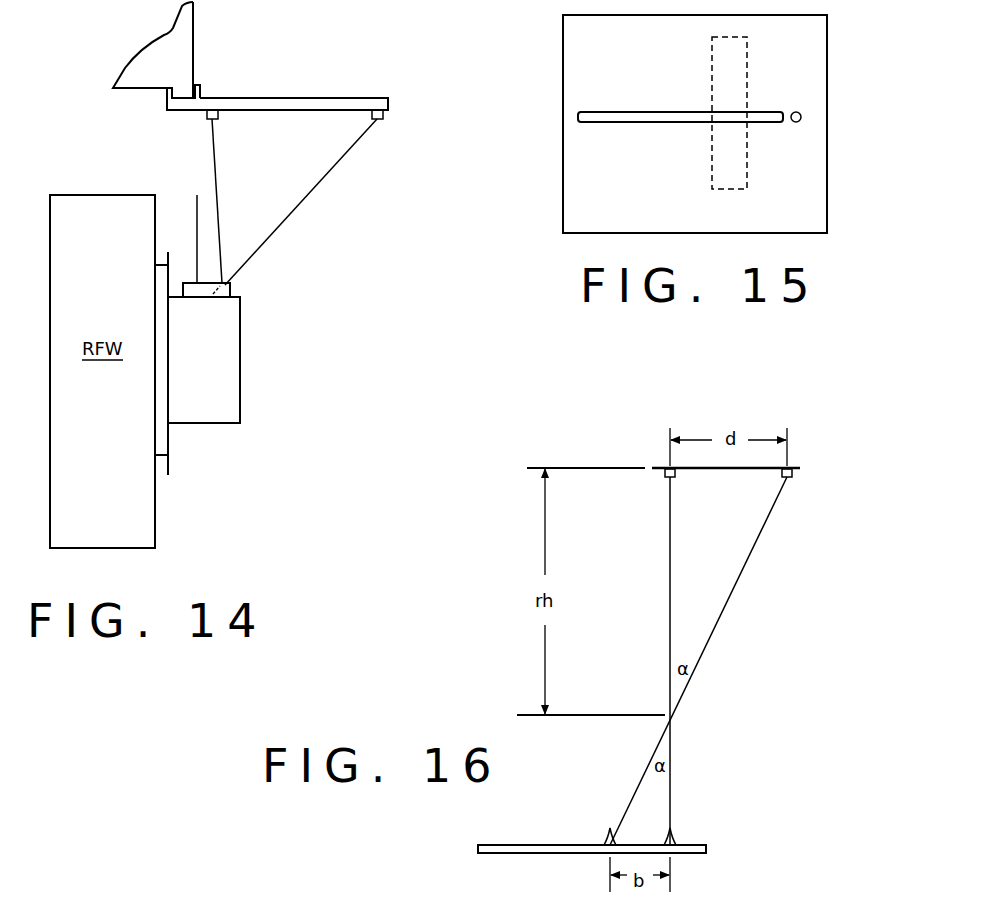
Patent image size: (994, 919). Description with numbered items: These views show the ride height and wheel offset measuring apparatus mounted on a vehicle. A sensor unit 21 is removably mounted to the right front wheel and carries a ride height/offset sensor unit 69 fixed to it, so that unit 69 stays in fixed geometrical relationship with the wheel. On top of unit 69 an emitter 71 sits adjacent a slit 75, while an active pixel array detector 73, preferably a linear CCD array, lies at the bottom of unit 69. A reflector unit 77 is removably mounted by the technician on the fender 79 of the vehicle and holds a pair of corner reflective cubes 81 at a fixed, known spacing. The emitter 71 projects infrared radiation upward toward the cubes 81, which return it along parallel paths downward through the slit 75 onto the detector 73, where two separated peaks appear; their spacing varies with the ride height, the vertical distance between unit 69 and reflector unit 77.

In FIG. 14, the sensor unit 21 is at (221, 365).
In FIG. 14, the ride height/offset sensor unit 69 is at (197, 195).
In FIG. 15, the ride height/offset sensor unit 69 is at (660, 62).
In FIG. 15, the emitter 71 is at (794, 124).
In FIG. 15, the active pixel array detector 73 is at (747, 92).
In FIG. 16, the active pixel array detector 73 is at (555, 845).
In FIG. 15, the slit 75 is at (635, 112).
In FIG. 14, the reflector unit 77 is at (278, 98).
In FIG. 16, the reflector unit 77 is at (797, 468).
In FIG. 14, the fender 79 is at (193, 30).
In FIG. 14, the corner reflective cubes 81 is at (218, 115).
In FIG. 16, the corner reflective cubes 81 is at (663, 477).